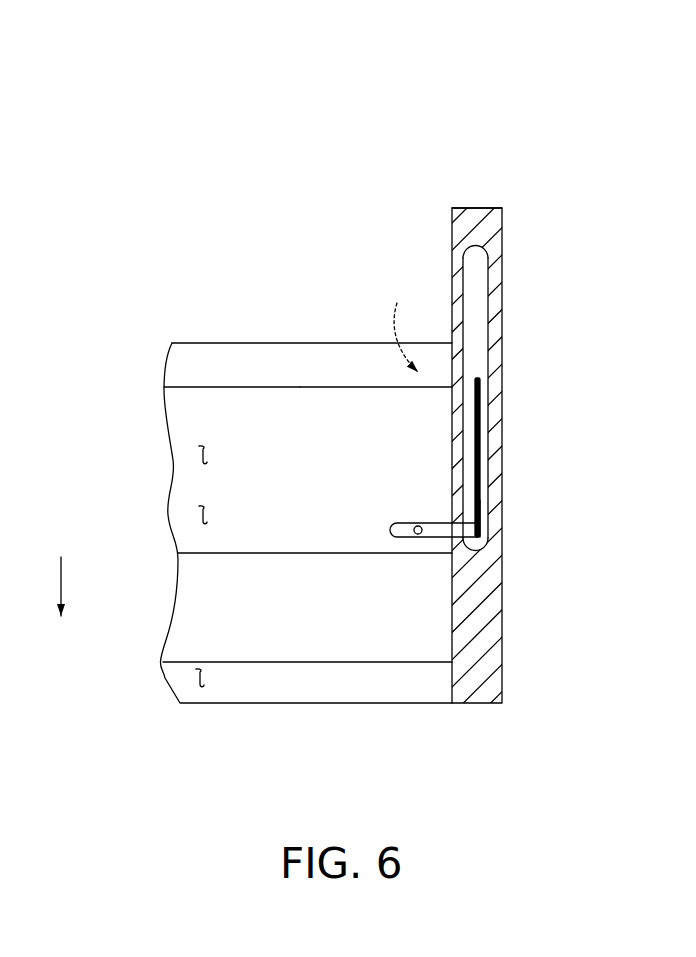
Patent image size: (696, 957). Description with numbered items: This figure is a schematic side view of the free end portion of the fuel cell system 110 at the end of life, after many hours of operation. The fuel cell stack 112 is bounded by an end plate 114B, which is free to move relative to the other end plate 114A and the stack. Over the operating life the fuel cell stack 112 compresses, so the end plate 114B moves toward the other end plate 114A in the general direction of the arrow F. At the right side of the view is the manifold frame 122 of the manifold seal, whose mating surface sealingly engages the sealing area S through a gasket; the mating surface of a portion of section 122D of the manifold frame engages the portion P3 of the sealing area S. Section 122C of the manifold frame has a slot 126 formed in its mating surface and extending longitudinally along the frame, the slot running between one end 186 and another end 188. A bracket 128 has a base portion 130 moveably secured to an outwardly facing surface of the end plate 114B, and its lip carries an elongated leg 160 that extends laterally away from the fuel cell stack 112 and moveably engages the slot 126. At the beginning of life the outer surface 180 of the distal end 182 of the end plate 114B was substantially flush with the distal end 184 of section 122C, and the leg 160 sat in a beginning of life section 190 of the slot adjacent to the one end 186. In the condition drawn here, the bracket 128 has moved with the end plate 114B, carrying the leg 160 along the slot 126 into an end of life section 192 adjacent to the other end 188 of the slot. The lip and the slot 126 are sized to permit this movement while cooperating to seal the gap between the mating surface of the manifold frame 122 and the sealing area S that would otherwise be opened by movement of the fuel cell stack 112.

The fuel cell system 110 is at (441, 146).
The distal end 184 is at (480, 208).
The section of the manifold frame 122C is at (490, 217).
The one end of the slot 186 is at (484, 250).
The beginning of life section 190 is at (478, 313).
The slot 126 is at (478, 366).
The elongated leg 160 is at (483, 467).
The end of life section 192 is at (483, 507).
The another end of the slot 188 is at (490, 540).
The manifold frame 122 is at (527, 657).
The distal end 182 is at (243, 315).
The outer surface 180 is at (186, 343).
The section of the manifold frame 122D is at (275, 363).
The sealing area S is at (404, 325).
The bracket 128 is at (410, 520).
The base portion 130 is at (402, 531).
The end plate 114B is at (203, 455).
The portion of the sealing area P3 is at (203, 515).
The arrow F is at (61, 582).
The fuel cell stack 112 is at (218, 628).
The end plate 114A is at (200, 678).